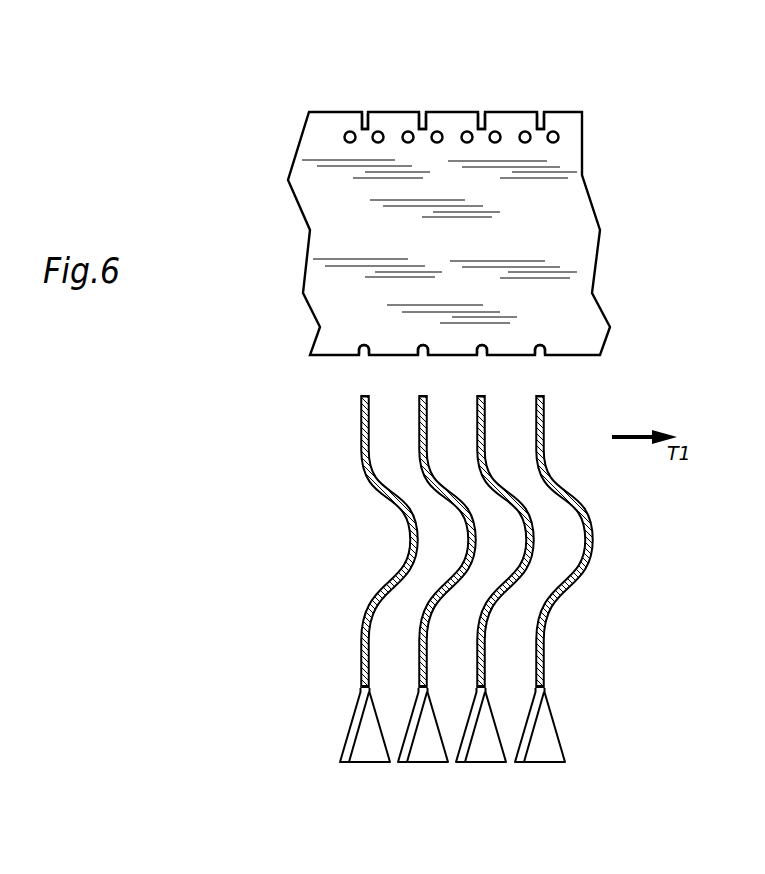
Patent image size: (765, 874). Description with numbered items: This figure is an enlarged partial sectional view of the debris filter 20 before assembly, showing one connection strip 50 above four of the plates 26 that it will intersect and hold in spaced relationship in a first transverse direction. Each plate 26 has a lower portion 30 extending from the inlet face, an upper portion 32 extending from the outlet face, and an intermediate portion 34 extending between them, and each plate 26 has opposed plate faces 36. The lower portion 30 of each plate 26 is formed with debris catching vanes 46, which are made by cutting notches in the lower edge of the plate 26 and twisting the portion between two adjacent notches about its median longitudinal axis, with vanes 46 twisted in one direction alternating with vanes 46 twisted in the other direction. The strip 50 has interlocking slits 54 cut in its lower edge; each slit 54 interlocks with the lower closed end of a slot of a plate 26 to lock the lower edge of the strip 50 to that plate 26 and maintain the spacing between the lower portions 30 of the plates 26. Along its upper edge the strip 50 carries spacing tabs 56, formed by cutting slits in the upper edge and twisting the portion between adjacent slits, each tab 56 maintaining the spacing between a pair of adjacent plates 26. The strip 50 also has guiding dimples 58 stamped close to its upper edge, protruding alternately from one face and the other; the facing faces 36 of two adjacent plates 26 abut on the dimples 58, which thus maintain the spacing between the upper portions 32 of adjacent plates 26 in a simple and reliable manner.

The debris filter 20 is at (186, 458).
The plates 26 is at (466, 541).
The lower portion 30 is at (360, 657).
The upper portion 32 is at (360, 427).
The intermediate portion 34 is at (409, 550).
The plate faces 36 is at (386, 622).
The debris catching vanes 46 is at (422, 750).
The connection strips 50 is at (449, 233).
The interlocking slits 54 is at (487, 364).
The spacing tabs 56 is at (450, 125).
The guiding dimples 58 is at (378, 143).